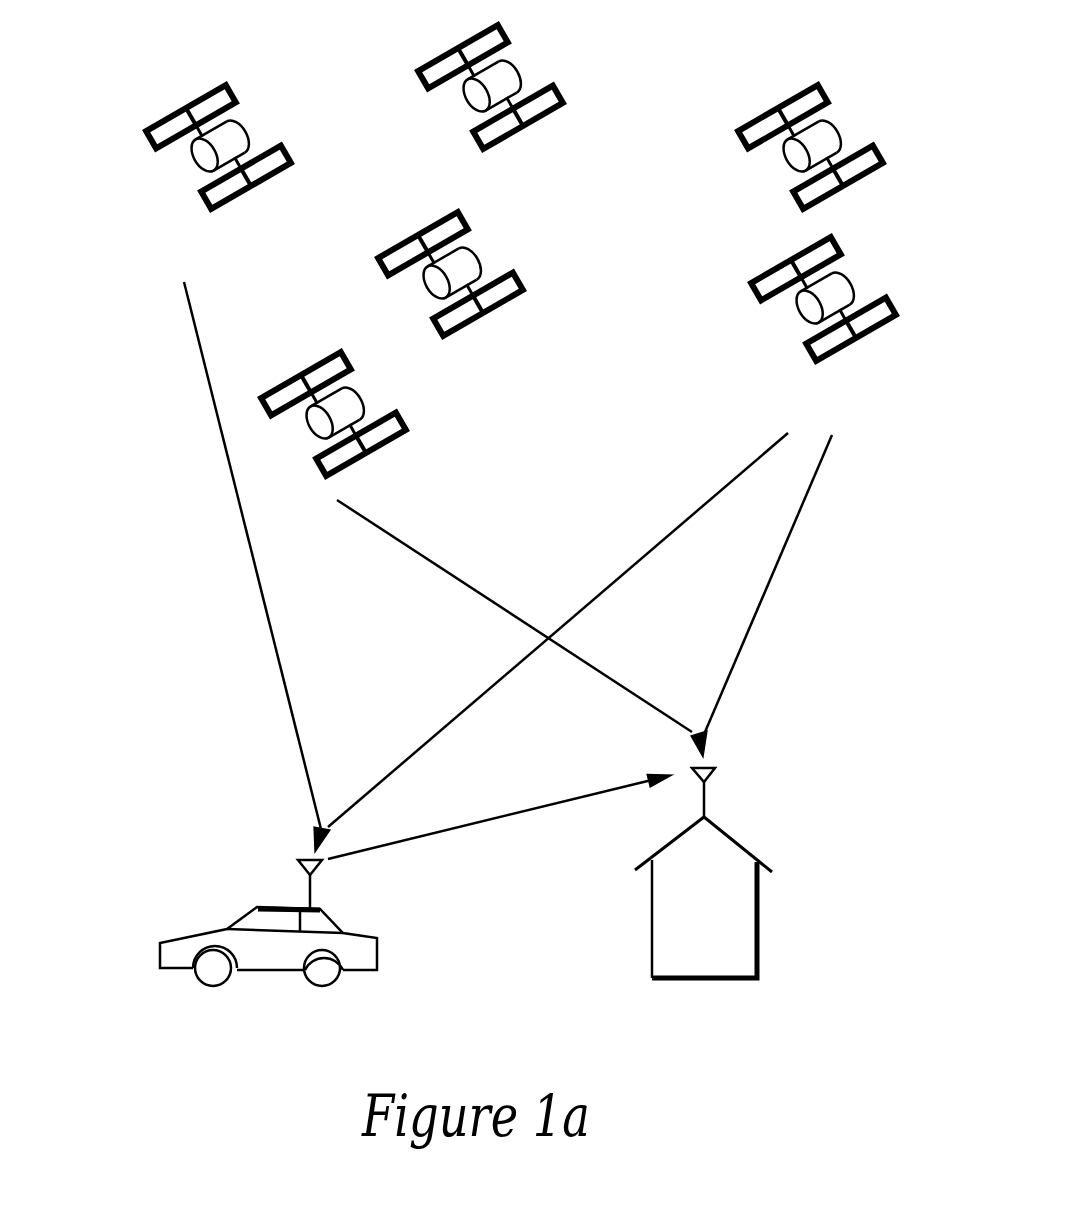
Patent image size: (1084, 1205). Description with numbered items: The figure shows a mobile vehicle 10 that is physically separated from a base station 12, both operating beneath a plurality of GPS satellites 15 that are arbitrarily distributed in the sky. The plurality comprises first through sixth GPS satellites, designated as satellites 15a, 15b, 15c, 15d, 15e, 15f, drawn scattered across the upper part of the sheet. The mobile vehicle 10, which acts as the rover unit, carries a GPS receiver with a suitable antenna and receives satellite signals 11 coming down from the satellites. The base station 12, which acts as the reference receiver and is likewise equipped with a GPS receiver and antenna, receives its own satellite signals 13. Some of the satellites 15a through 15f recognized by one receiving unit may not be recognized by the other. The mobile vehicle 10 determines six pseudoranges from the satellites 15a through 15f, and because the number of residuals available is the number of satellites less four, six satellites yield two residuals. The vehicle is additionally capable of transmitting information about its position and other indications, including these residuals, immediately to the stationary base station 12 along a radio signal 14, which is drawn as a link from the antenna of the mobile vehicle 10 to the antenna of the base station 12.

The mobile vehicle 10 is at (141, 932).
The satellite signals 11 is at (259, 632).
The base station 12 is at (633, 912).
The satellite signals 13 is at (606, 692).
The radio signal 14 is at (511, 805).
The GPS satellites 15 is at (143, 56).
The first GPS satellite 15a is at (189, 189).
The second GPS satellite 15b is at (458, 130).
The third GPS satellite 15c is at (731, 119).
The fourth GPS satellite 15d is at (294, 362).
The fifth GPS satellite 15e is at (366, 255).
The sixth GPS satellite 15f is at (744, 271).